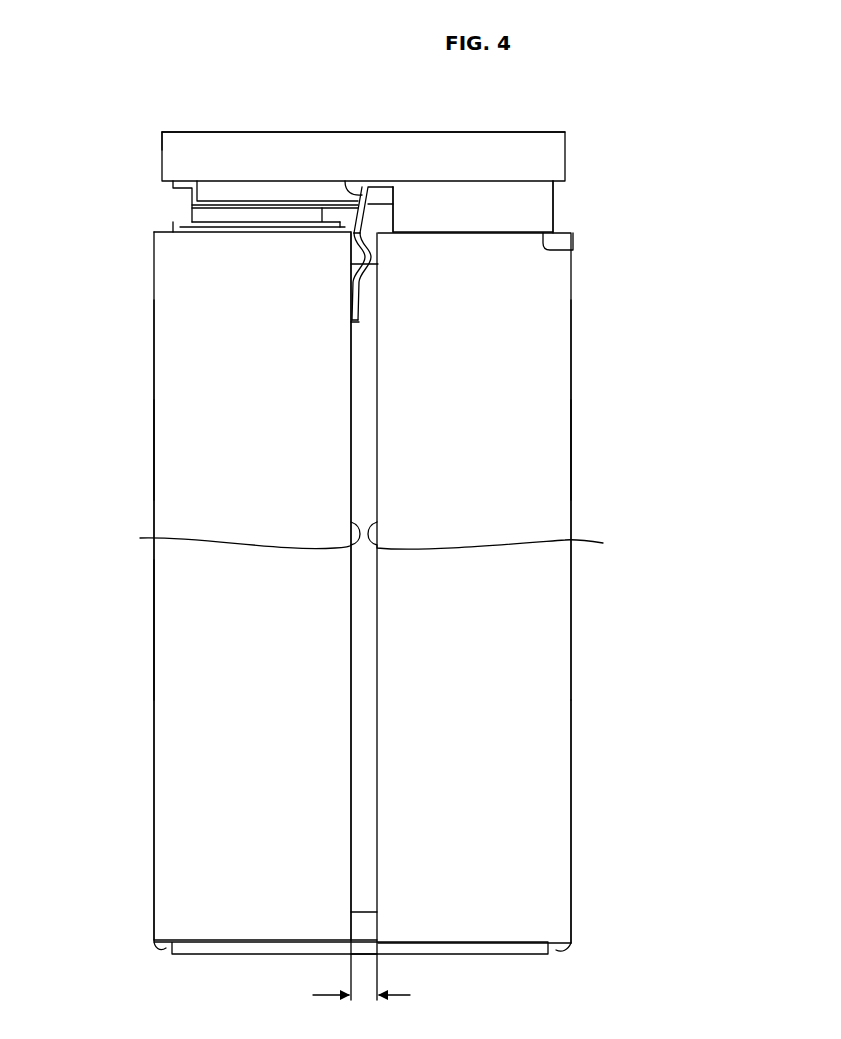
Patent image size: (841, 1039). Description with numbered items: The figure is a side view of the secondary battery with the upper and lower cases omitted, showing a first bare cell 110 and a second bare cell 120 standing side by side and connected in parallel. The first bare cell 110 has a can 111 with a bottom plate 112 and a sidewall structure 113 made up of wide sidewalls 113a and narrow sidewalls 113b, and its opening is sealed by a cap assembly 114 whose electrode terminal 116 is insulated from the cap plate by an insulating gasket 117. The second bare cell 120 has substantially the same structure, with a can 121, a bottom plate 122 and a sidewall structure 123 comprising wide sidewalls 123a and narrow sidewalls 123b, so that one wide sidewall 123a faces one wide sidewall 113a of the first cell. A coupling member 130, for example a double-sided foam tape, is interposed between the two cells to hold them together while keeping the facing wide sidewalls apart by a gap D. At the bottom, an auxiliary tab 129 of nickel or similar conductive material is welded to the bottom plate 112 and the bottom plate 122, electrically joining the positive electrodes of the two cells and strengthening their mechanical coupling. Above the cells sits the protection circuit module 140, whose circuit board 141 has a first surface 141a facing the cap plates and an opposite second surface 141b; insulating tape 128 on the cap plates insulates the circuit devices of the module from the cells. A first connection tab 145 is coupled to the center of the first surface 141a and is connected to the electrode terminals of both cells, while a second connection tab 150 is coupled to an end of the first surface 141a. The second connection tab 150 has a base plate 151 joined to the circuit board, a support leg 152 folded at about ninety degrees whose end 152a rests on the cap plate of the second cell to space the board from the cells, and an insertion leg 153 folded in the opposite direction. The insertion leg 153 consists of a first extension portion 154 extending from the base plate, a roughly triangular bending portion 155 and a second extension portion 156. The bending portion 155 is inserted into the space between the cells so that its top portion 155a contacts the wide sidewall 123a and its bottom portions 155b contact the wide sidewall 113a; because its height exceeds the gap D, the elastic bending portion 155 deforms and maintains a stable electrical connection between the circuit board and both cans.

The first bare cell 110 is at (176, 360).
The can 111 is at (180, 602).
The bottom plate 112 is at (152, 945).
The sidewall structure 113 is at (152, 478).
The wide sidewall 113a is at (140, 538).
The narrow sidewall 113b is at (165, 443).
The cap assembly 114 is at (163, 229).
The electrode terminal 116 is at (229, 214).
The insulating gasket 117 is at (265, 223).
The second bare cell 120 is at (552, 398).
The can 121 is at (555, 795).
The bottom plate 122 is at (558, 950).
The sidewall structure 123 is at (572, 478).
The wide sidewall 123a is at (512, 539).
The narrow sidewall 123b is at (560, 445).
The insulating tape 128 is at (198, 232).
The auxiliary tab 129 is at (221, 952).
The coupling member 130 is at (360, 692).
The protection circuit module 140 is at (148, 155).
The circuit board 141 is at (205, 134).
The first surface 141a is at (162, 182).
The second surface 141b is at (165, 131).
The first connection tab 145 is at (264, 203).
The second connection tab 150 is at (560, 208).
The base plate 151 is at (380, 185).
The support leg 152 is at (467, 198).
The end of support leg 152a is at (574, 242).
The insertion leg 153 is at (372, 297).
The first extension portion 154 is at (349, 183).
The bending portion 155 is at (362, 282).
The top portion 155a is at (378, 268).
The bottom portions 155b is at (357, 240).
The second extension portion 156 is at (354, 320).
The gap D is at (361, 1010).